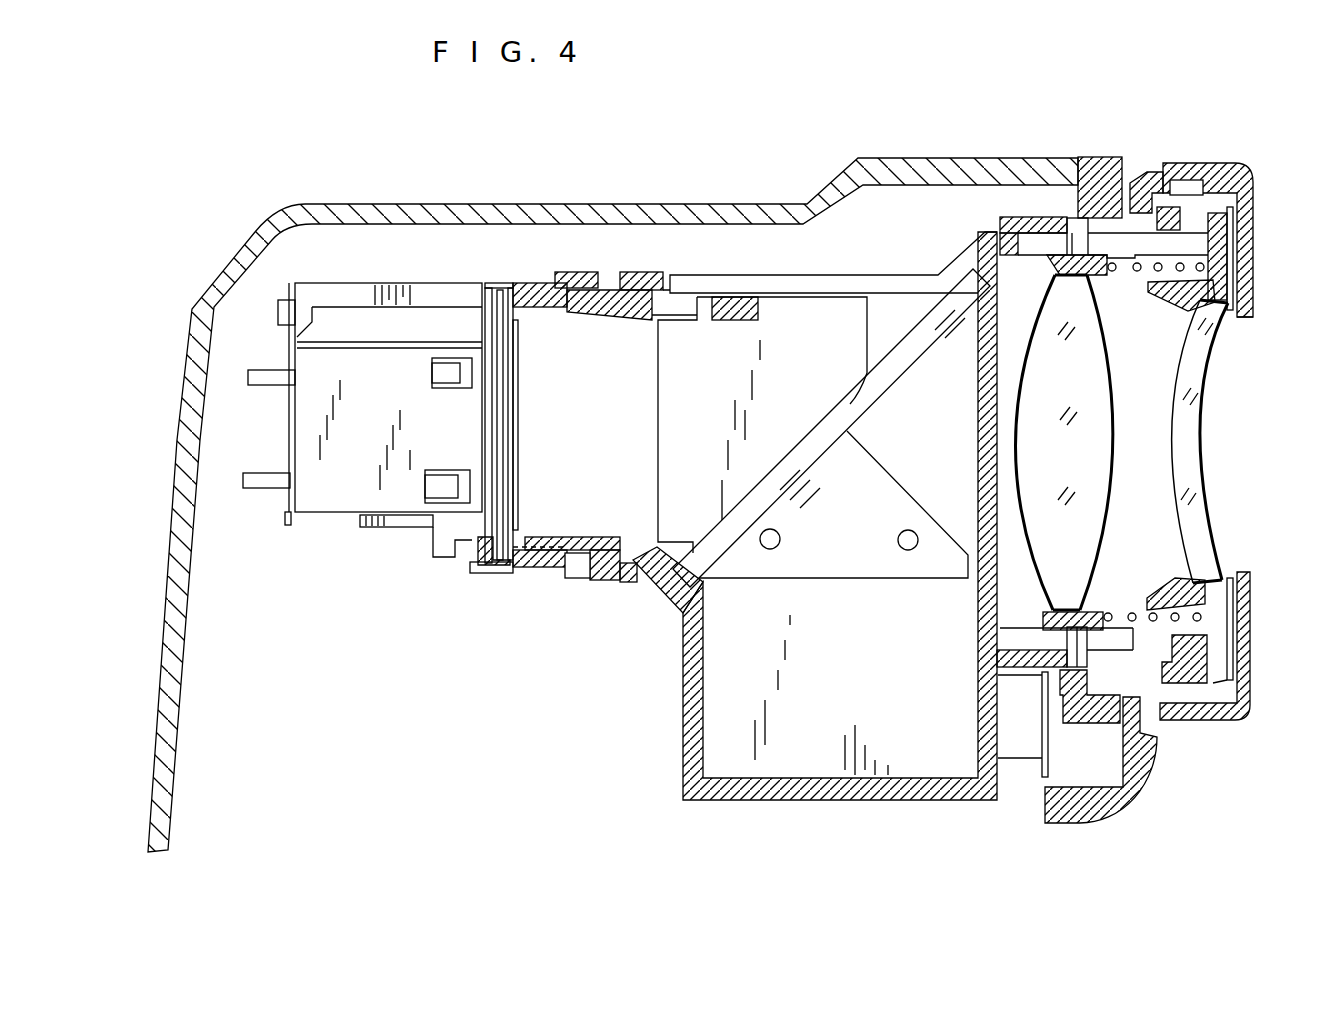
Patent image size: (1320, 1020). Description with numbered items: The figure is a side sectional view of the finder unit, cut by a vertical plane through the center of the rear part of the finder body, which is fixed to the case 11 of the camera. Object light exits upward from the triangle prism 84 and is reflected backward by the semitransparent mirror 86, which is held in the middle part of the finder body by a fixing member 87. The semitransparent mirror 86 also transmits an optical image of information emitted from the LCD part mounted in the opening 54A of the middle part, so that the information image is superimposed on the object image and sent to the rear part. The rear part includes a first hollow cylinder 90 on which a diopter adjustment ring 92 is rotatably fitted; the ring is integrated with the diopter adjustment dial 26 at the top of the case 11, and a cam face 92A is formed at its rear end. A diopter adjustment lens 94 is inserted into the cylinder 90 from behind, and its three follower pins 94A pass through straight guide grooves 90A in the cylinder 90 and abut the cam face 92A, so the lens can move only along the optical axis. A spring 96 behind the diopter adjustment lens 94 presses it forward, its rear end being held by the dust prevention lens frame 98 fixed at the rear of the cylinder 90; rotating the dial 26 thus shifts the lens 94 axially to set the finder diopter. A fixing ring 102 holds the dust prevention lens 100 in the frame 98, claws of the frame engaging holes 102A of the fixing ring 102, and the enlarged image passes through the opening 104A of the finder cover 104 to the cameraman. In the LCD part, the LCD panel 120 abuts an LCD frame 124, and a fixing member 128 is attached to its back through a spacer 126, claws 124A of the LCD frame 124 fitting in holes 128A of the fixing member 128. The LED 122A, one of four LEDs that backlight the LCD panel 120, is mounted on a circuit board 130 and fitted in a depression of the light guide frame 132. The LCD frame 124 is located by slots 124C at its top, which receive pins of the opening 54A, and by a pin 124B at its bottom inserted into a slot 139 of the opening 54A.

The case 11 is at (880, 168).
The diopter adjustment dial 26 is at (1102, 157).
The opening 54A is at (583, 318).
The triangle prism 84 is at (722, 700).
The semitransparent mirror 86 is at (900, 375).
The fixing member 87 is at (838, 357).
The first hollow cylinder 90 is at (1003, 250).
The straight guide grooves 90A is at (1140, 235).
The diopter adjustment ring 92 is at (1005, 222).
The cam face 92A is at (1075, 218).
The diopter adjustment lens 94 is at (1095, 452).
The follower pins 94A is at (1090, 262).
The spring 96 is at (1168, 297).
The dust prevention lens frame 98 is at (1228, 255).
The dust prevention lens 100 is at (1196, 495).
The fixing ring 102 is at (1232, 290).
The holes 102A is at (1208, 703).
The finder cover 104 is at (1250, 187).
The opening 104A is at (1243, 318).
The LCD panel 120 is at (505, 557).
The LED 122A is at (325, 490).
The LCD frame 124 is at (575, 290).
The claws 124A is at (545, 290).
The pin 124B is at (607, 575).
The slots 124C is at (625, 272).
The spacer 126 is at (477, 570).
The fixing member 128 is at (485, 287).
The holes 128A is at (495, 283).
The circuit board 130 is at (292, 512).
The light guide frame 132 is at (365, 290).
The slot 139 is at (613, 585).